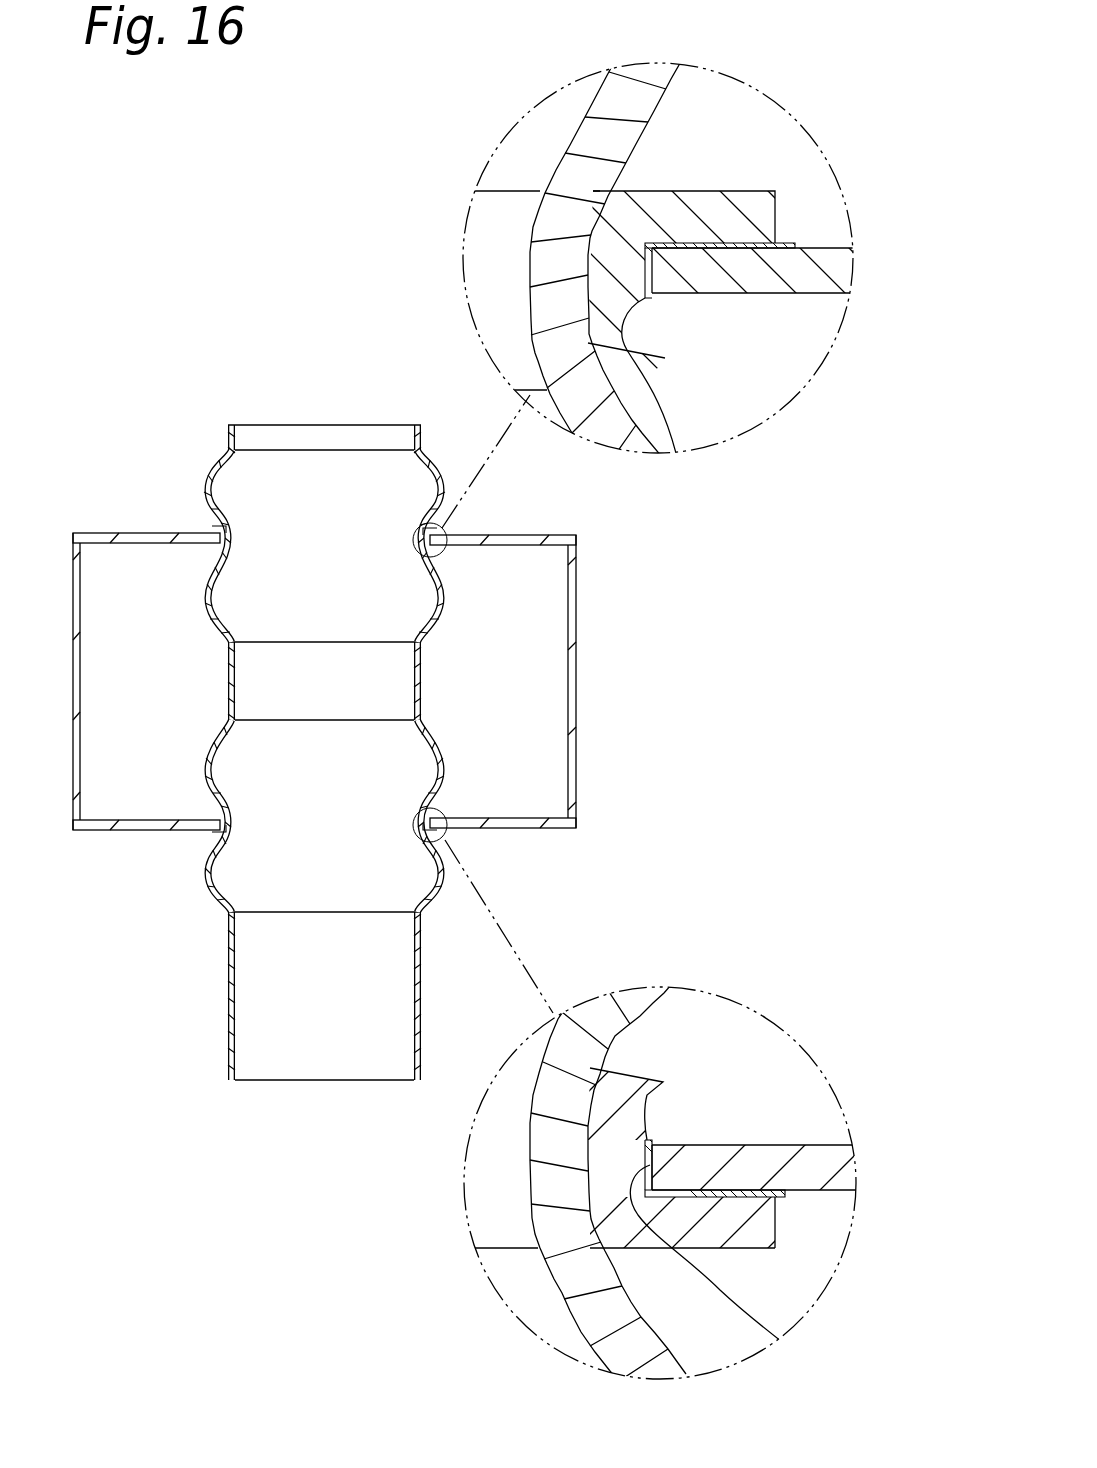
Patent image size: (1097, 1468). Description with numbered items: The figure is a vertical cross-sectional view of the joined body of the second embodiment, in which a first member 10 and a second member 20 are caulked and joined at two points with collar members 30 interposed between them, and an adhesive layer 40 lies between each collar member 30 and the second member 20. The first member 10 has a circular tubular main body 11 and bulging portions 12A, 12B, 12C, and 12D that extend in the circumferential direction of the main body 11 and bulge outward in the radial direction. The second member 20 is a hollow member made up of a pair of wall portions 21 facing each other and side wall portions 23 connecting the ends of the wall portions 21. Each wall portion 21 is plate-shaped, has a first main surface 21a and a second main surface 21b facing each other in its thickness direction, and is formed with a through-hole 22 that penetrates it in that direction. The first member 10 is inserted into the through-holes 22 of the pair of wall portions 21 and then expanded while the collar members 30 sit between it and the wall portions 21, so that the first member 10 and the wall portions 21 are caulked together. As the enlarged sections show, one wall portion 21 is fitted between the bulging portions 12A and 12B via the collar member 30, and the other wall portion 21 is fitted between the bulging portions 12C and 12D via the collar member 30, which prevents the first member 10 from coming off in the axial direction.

The first member 10 is at (414, 706).
The main body 11 is at (421, 446).
The bulging portion 12A is at (216, 463).
The bulging portion 12B is at (443, 580).
The bulging portion 12C is at (443, 767).
The bulging portion 12D is at (207, 888).
The second member 20 is at (559, 766).
The wall portion 21 is at (150, 533).
The first main surface 21a is at (795, 243).
The second main surface 21b is at (752, 294).
The through-hole 22 is at (862, 1240).
The side wall portion 23 is at (78, 642).
The collar member 30 is at (755, 179).
The adhesive layer 40 is at (786, 233).